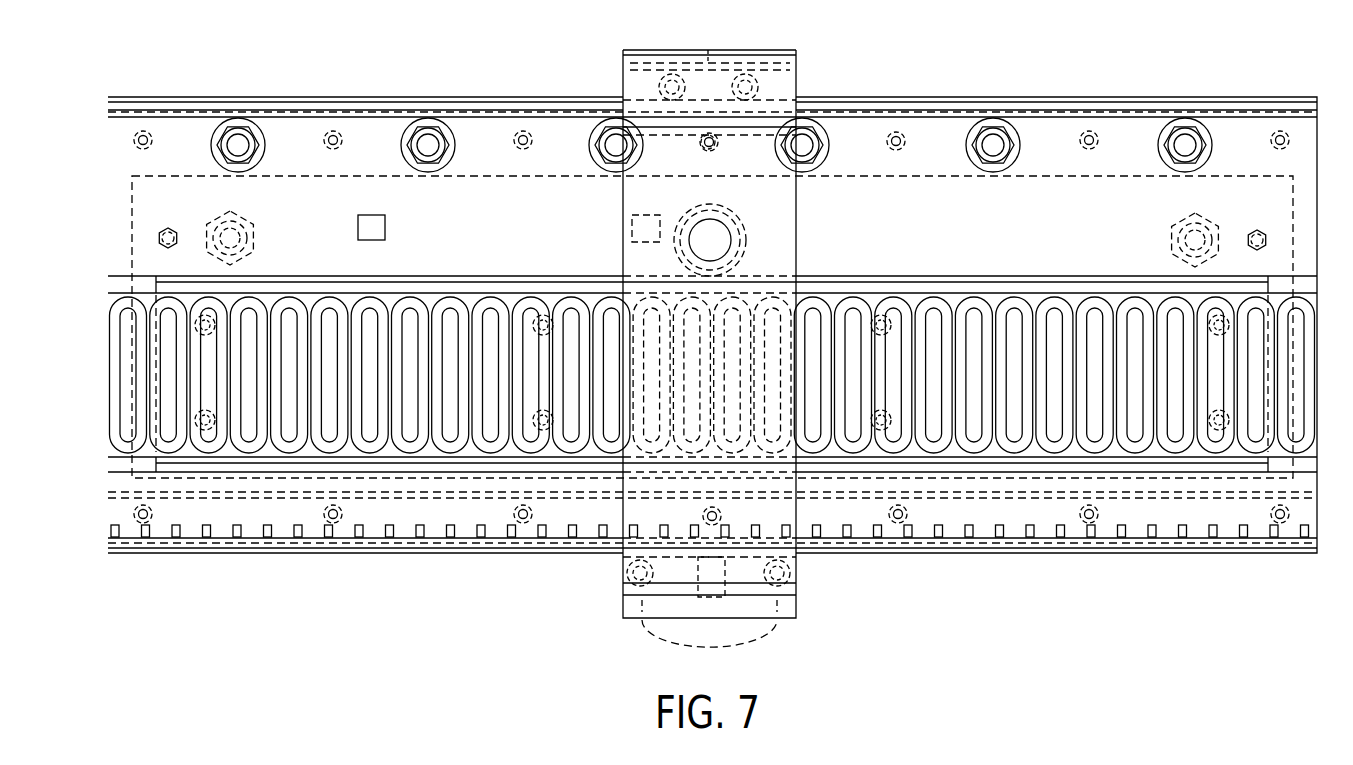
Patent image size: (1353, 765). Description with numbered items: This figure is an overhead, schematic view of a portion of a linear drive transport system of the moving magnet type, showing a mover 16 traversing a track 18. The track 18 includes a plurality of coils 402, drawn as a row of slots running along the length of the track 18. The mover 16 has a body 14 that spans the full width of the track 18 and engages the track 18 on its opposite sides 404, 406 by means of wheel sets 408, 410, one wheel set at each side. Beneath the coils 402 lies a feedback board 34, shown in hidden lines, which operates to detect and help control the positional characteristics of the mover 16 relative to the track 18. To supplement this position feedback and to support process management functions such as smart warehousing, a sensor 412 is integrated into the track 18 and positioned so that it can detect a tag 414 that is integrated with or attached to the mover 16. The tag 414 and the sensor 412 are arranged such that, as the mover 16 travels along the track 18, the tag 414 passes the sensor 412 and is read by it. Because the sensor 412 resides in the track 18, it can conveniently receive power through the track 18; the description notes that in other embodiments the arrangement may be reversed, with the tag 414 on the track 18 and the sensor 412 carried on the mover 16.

The body 14 is at (797, 255).
The mover 16 is at (763, 50).
The track 18 is at (1076, 89).
The feedback board 34 is at (182, 172).
The coils 402 is at (115, 381).
The side 404 is at (440, 97).
The side 406 is at (540, 566).
The wheel set 408 is at (708, 50).
The wheel set 410 is at (709, 606).
The sensor 412 is at (386, 228).
The tag 414 is at (631, 231).